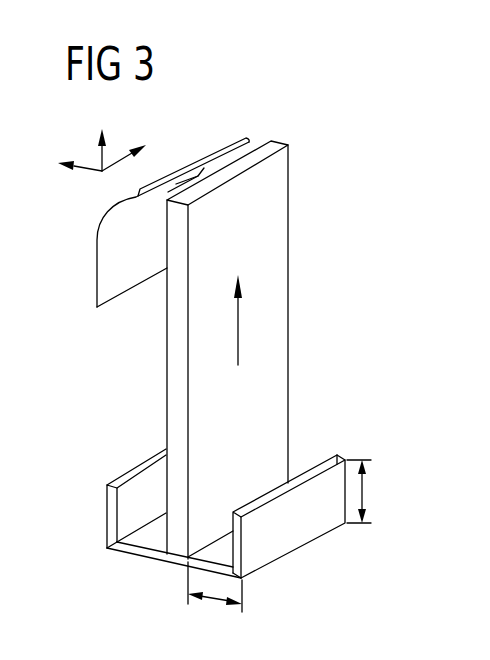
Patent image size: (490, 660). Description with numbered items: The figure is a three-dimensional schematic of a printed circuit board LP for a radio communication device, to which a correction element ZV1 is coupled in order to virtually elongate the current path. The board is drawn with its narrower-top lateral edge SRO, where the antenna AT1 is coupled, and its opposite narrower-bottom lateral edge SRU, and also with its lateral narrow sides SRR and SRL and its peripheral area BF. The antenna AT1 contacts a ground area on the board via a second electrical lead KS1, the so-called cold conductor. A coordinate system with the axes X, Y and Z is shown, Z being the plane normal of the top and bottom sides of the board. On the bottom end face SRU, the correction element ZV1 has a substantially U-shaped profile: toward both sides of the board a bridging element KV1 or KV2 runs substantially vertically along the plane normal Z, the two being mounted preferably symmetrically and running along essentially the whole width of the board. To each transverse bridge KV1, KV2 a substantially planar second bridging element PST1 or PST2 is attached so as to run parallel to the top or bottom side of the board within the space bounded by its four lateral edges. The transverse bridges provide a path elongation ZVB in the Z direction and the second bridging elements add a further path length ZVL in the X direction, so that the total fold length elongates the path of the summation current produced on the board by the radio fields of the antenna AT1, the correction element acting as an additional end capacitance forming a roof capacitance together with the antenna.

The printed circuit board LP is at (252, 220).
The narrower-top lateral edge SRO is at (273, 141).
The right narrow side of plate SRR is at (288, 282).
The left narrow side of plate SRL is at (176, 362).
The narrower-bottom lateral edge SRU is at (172, 567).
The peripheral area BF is at (186, 403).
The second electrical lead KS1 is at (213, 172).
The antenna AT1 is at (133, 262).
The second bridging element PST1 is at (288, 527).
The second bridging element PST2 is at (108, 485).
The bridging element KV1 is at (226, 556).
The bridging element KV2 is at (145, 542).
The correction element ZV1 is at (150, 495).
The further path length ZVL is at (365, 491).
The path elongation ZVB is at (205, 602).
The X direction X is at (102, 136).
The Y axis Y is at (132, 148).
The plane normal Z is at (73, 159).